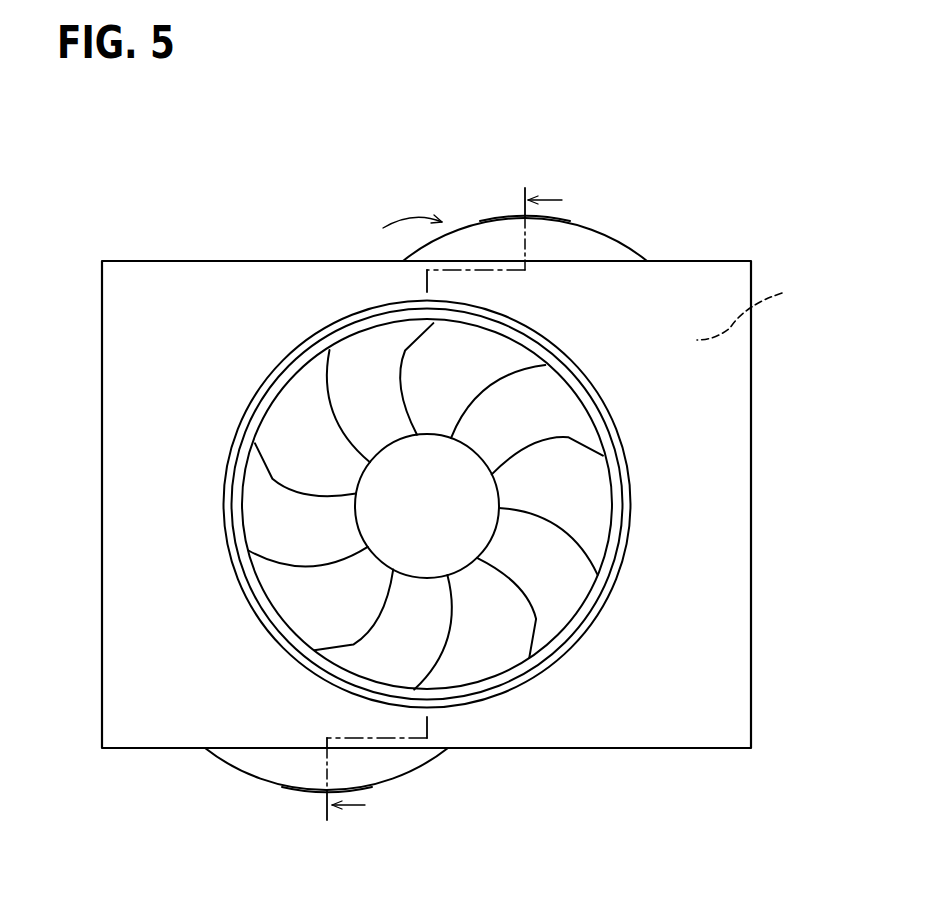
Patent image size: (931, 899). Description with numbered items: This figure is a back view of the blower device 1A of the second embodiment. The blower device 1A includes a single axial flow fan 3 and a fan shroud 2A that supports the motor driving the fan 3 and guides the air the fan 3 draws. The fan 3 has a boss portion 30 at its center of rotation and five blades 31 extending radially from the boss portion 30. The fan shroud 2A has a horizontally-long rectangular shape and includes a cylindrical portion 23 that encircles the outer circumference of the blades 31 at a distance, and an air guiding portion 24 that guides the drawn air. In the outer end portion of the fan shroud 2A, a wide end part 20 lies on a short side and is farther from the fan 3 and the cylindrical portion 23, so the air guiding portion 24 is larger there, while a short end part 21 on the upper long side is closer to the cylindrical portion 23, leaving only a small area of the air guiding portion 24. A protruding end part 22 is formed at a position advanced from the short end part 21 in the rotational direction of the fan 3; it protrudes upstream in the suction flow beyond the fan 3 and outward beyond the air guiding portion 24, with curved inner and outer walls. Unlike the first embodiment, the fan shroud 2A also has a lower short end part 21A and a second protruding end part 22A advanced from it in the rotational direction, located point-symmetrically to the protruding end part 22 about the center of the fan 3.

The blower device 1A is at (748, 250).
The fan shroud 2A is at (686, 297).
The wide end part 20 is at (102, 424).
The short end part 21 is at (403, 261).
The protruding end part 22 is at (500, 218).
The short end part 21A is at (448, 748).
The protruding end part 22A is at (302, 790).
The cylindrical portion 23 is at (583, 378).
The air guiding portion 24 is at (752, 311).
The fan 3 is at (548, 519).
The boss portion 30 is at (380, 492).
The blades 31 is at (352, 377).